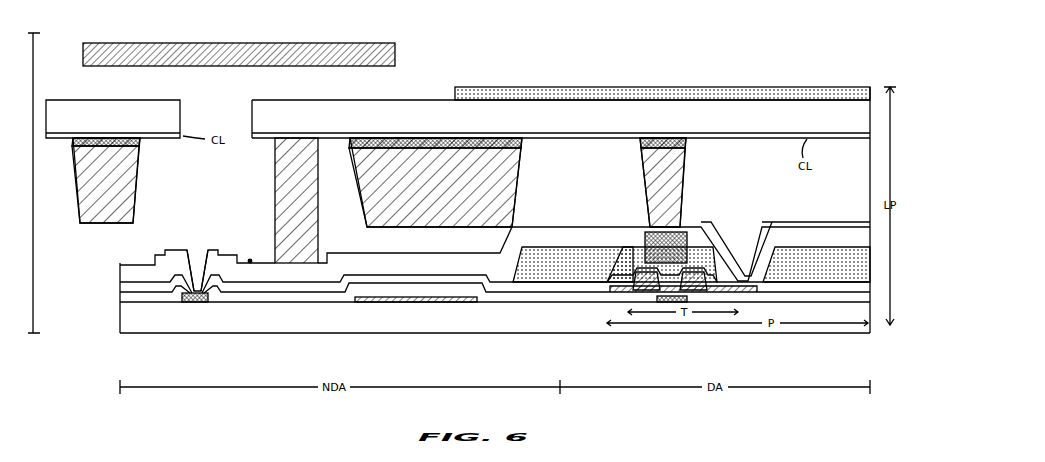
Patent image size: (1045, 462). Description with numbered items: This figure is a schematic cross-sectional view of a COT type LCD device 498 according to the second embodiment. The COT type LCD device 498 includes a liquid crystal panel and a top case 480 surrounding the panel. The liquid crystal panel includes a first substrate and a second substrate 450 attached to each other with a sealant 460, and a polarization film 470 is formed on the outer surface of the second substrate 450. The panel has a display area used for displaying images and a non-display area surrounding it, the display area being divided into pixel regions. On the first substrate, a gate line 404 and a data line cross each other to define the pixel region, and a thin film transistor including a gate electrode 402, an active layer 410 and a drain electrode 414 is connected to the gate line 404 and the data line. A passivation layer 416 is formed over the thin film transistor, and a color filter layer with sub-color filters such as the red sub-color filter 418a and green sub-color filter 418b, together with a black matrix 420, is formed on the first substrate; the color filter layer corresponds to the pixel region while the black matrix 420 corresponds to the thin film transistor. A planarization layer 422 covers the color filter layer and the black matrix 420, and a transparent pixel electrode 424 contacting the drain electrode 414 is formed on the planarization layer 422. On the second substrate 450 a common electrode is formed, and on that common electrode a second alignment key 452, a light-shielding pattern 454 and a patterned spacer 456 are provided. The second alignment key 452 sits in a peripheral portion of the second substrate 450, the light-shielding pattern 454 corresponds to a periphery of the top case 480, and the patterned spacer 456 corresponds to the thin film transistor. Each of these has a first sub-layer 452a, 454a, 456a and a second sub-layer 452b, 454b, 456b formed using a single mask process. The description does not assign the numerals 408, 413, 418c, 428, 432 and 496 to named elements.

The gate electrode 402 is at (670, 302).
The gate line 404 is at (418, 305).
The buffer layer 408 is at (525, 297).
The active layer 410 is at (705, 292).
The gate insulating layer 413 is at (611, 285).
The drain electrode 414 is at (750, 284).
The passivation layer 416 is at (292, 292).
The red sub-color filter 418a is at (537, 245).
The green sub-color filter 418b is at (712, 242).
The third conductive pattern 418c is at (800, 245).
The black matrix 420 is at (650, 232).
The planarization layer 422 is at (876, 242).
The transparent pixel electrode 424 is at (848, 222).
The contact hole 428 is at (200, 250).
The boundary point 432 is at (250, 259).
The second substrate 450 is at (182, 116).
The second alignment key 452 is at (203, 151).
The first sub-layer 452a is at (143, 145).
The second sub-layer 452b is at (140, 193).
The light-shielding pattern 454 is at (585, 165).
The first sub-layer 454a is at (522, 143).
The second sub-layer 454b is at (516, 172).
The patterned spacer 456 is at (752, 165).
The first sub-layer 456a is at (687, 143).
The second sub-layer 456b is at (684, 172).
The sealant 460 is at (275, 195).
The polarization film 470 is at (800, 87).
The top case 480 is at (401, 55).
The pad electrode 496 is at (193, 302).
The COT type LCD device 498 is at (26, 183).